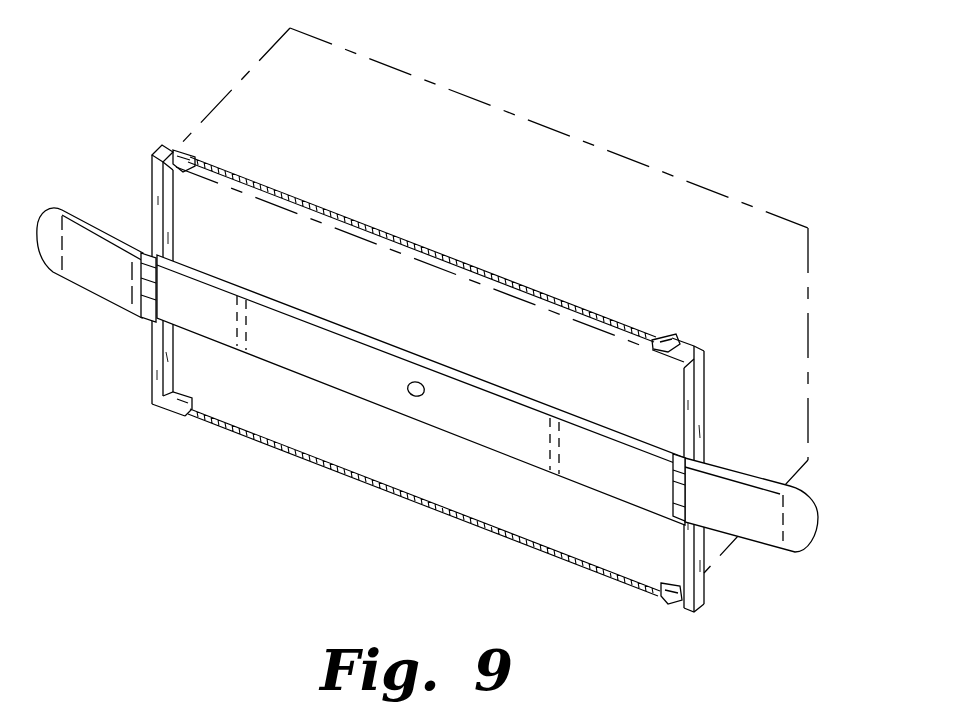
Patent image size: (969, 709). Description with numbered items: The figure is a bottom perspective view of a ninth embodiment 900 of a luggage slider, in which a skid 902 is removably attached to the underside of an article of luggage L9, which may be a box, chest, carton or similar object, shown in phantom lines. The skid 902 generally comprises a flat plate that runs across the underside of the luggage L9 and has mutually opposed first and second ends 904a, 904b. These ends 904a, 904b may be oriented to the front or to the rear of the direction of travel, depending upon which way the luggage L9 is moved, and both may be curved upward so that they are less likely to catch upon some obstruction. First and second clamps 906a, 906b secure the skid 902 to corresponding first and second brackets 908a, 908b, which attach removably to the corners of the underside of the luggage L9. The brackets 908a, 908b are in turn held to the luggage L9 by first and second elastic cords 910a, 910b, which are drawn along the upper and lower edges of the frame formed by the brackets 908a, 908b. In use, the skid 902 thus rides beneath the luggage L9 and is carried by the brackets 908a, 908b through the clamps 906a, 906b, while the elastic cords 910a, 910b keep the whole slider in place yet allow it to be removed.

The ninth embodiment 900 is at (423, 334).
The skid 902 is at (307, 380).
The first end 904a is at (78, 286).
The second end 904b is at (795, 554).
The first clamp 906a is at (140, 262).
The second clamp 906b is at (693, 465).
The first bracket 908a is at (153, 159).
The second bracket 908b is at (705, 379).
The first elastic cord 910a is at (436, 250).
The second elastic cord 910b is at (446, 513).
The article of luggage L9 is at (603, 148).